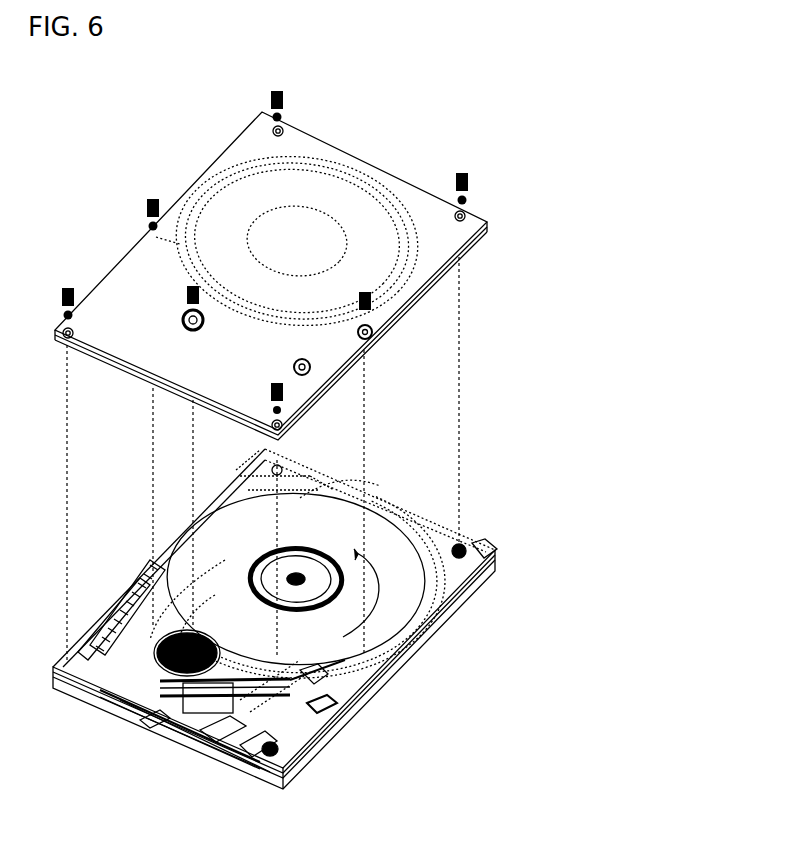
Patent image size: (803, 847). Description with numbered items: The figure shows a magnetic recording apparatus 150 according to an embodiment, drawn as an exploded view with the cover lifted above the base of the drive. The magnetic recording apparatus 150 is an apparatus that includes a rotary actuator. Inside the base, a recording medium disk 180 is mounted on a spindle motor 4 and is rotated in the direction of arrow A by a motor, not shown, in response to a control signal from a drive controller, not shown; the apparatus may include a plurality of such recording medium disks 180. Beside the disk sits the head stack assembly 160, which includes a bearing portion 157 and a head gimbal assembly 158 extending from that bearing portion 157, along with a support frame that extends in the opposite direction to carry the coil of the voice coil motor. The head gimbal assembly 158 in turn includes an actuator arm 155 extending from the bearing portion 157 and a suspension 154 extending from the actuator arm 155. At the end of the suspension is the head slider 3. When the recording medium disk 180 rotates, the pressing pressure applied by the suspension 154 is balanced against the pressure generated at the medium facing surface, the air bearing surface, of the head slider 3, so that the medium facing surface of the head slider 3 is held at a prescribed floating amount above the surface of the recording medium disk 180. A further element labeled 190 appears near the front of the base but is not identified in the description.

The magnetic recording apparatus 150 is at (397, 138).
The recording medium disk 180 is at (359, 579).
The spindle motor 4 is at (400, 518).
The arrow A is at (369, 593).
The head stack assembly 160 is at (246, 668).
The head slider 3 is at (307, 678).
The bearing portion 157 is at (170, 687).
The head gimbal assembly 158 is at (152, 718).
The actuator arm 155 is at (180, 740).
The suspension 154 is at (217, 758).
The fastener 190 is at (253, 773).